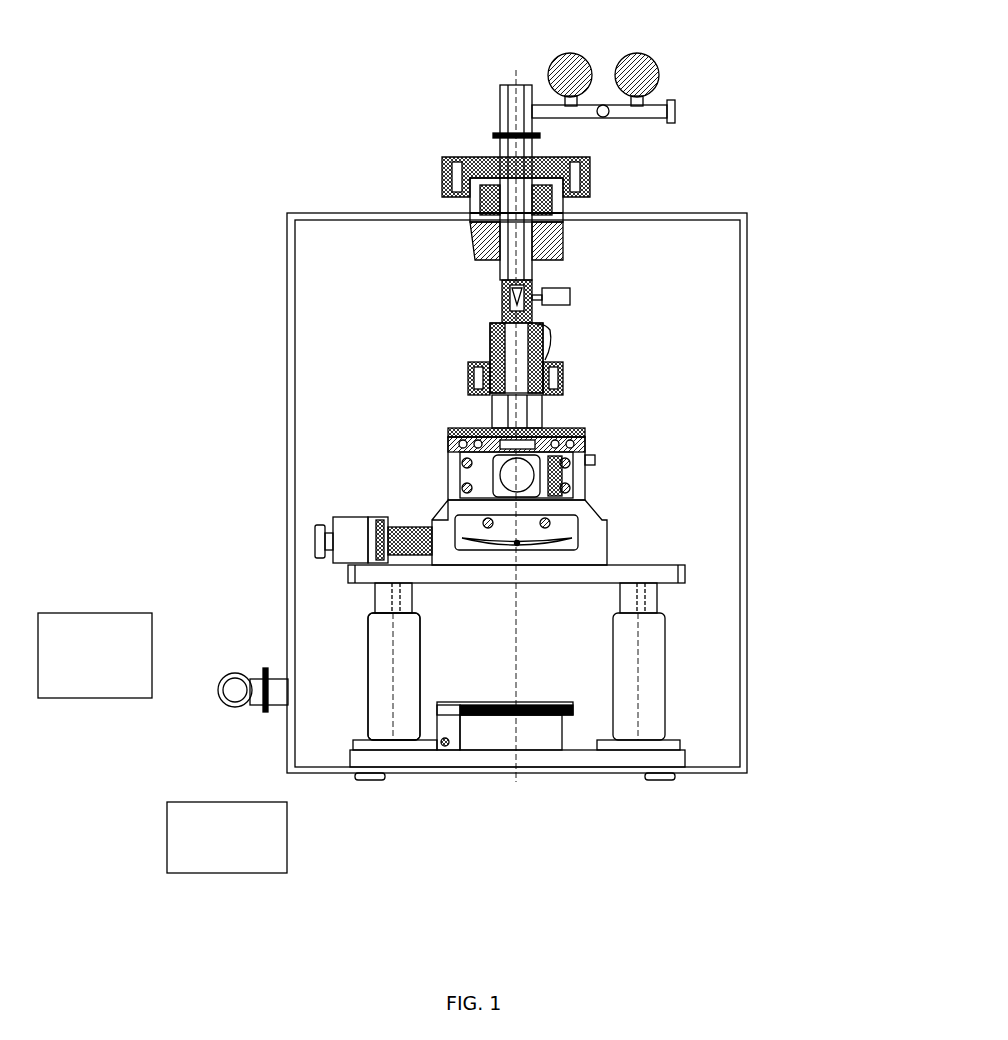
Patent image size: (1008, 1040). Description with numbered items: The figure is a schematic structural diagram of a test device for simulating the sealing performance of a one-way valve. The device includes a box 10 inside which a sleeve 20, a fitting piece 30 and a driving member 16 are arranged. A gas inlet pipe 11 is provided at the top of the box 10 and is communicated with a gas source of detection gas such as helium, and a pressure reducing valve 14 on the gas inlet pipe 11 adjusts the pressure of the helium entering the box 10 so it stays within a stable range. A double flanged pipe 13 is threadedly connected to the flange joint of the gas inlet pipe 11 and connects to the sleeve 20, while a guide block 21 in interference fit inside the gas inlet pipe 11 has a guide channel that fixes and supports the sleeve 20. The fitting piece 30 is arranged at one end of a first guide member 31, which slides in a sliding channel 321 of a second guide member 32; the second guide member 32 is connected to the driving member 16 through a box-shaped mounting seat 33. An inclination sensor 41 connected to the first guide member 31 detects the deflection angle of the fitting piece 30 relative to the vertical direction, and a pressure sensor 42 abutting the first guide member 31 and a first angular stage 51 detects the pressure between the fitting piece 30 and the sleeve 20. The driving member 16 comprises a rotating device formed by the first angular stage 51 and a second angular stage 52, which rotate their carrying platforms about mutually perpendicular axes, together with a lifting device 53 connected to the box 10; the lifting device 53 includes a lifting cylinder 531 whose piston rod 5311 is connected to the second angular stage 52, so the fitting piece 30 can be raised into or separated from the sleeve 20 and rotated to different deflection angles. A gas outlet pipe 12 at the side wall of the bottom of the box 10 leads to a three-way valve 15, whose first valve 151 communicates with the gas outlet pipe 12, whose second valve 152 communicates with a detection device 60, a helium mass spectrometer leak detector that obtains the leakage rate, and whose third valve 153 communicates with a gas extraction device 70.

The box 10 is at (430, 213).
The gas inlet pipe 11 is at (563, 195).
The gas outlet pipe 12 is at (217, 693).
The double flanged pipe 13 is at (590, 170).
The pressure reducing valve 14 is at (578, 57).
The three-way valve 15 is at (230, 710).
The first valve 151 is at (162, 768).
The second valve 152 is at (162, 768).
The third valve 153 is at (155, 768).
The driving member 16 is at (825, 458).
The sleeve 20 is at (532, 265).
The guide block 21 is at (563, 240).
The fitting piece 30 is at (500, 287).
The first guide member 31 is at (505, 320).
The second guide member 32 is at (480, 362).
The sliding channel 321 is at (537, 325).
The mounting seat 33 is at (467, 387).
The inclination sensor 41 is at (570, 300).
The pressure sensor 42 is at (542, 408).
The first angular stage 51 is at (595, 468).
The second angular stage 52 is at (607, 537).
The lifting device 53 is at (640, 662).
The lifting cylinder 531 is at (380, 650).
The piston rod 5311 is at (378, 600).
The detection device 60 is at (215, 678).
The gas extraction device 70 is at (250, 710).